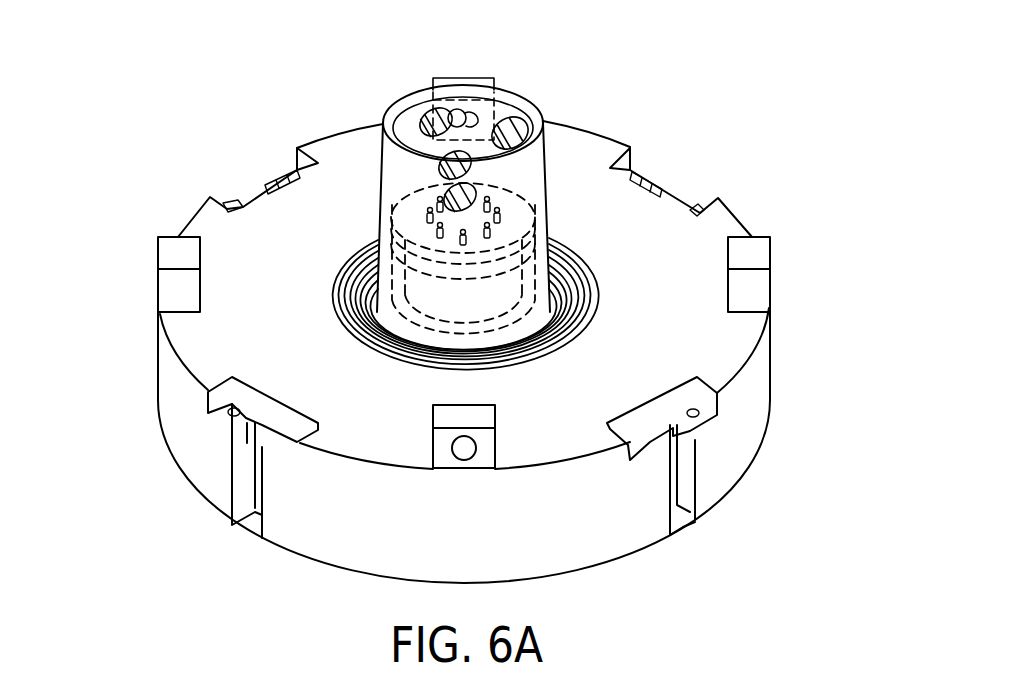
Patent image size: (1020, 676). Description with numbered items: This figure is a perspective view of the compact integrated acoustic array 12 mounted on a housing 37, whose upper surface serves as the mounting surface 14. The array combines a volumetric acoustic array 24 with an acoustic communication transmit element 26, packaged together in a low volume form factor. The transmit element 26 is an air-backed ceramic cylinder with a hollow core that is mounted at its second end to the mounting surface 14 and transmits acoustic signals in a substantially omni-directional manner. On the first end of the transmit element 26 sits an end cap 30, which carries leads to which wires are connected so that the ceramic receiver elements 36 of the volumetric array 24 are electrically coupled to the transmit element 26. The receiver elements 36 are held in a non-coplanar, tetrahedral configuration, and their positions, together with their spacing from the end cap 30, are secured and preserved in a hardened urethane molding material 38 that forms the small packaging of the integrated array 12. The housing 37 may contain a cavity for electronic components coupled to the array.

The integrated acoustic array 12 is at (376, 68).
The mounting surface 14 is at (687, 335).
The volumetric acoustic array 24 is at (514, 96).
The acoustic communication transmit element 26 is at (527, 285).
The end cap 30 is at (400, 207).
The receiver elements 36 is at (537, 145).
The housing 37 is at (173, 393).
The molding material 38 is at (400, 177).